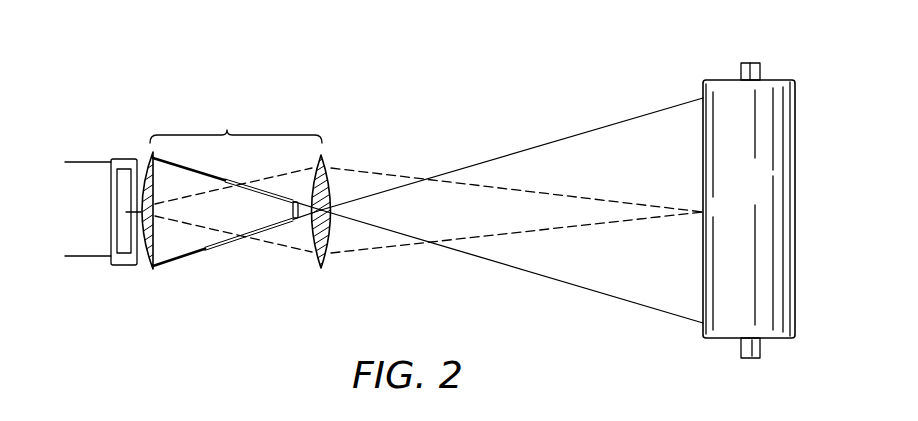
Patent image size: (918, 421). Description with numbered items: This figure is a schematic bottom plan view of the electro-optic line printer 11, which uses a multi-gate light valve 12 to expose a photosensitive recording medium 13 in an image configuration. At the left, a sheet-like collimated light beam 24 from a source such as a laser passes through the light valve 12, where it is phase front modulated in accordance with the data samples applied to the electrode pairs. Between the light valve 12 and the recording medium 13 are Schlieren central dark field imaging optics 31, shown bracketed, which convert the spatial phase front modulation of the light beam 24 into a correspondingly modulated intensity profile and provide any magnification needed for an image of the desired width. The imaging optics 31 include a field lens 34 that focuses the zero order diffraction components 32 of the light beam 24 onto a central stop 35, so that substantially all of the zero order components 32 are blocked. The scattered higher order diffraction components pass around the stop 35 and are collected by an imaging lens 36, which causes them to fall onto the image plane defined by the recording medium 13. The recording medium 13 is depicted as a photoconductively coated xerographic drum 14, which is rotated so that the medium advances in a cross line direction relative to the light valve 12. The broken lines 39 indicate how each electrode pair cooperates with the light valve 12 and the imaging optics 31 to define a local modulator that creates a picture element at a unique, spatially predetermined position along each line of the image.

The electro-optic line printer 11 is at (426, 138).
The multi-gate light valve 12 is at (130, 146).
The photosensitive recording medium 13 is at (716, 80).
The photoconductively coated xerographic drum 14 is at (725, 252).
The light beam 24 is at (93, 243).
The Schlieren central dark field imaging optics 31 is at (236, 124).
The zero order diffraction components 32 is at (256, 221).
The field lens 34 is at (151, 268).
The central stop 35 is at (296, 220).
The imaging lens 36 is at (328, 175).
The broken lines 39 is at (470, 235).